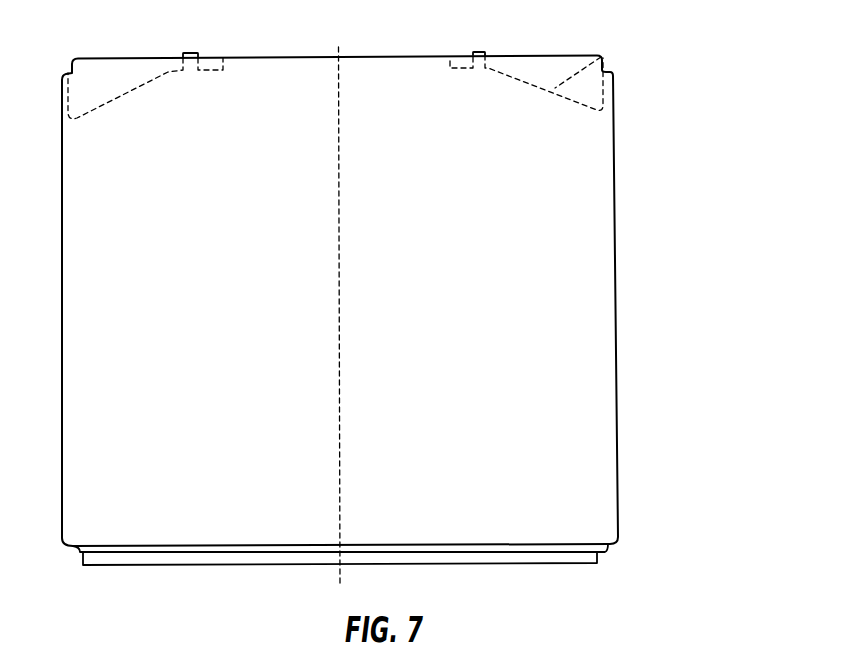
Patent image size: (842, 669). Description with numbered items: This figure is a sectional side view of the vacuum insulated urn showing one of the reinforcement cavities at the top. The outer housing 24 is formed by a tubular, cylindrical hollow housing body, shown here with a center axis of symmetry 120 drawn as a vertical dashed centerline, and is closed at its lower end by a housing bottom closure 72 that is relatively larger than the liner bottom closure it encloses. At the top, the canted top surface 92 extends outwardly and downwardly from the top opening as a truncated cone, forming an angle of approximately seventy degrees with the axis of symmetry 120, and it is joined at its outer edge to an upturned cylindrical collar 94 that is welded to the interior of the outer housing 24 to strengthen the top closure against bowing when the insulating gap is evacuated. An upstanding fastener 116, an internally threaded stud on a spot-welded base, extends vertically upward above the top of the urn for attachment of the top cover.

The outer housing 24 is at (597, 287).
The housing bottom closure 72 is at (508, 564).
The canted top surface 92 is at (603, 57).
The upturned cylindrical collar 94 is at (70, 100).
The upstanding fastener 116 is at (480, 52).
The center axis of symmetry 120 is at (340, 150).